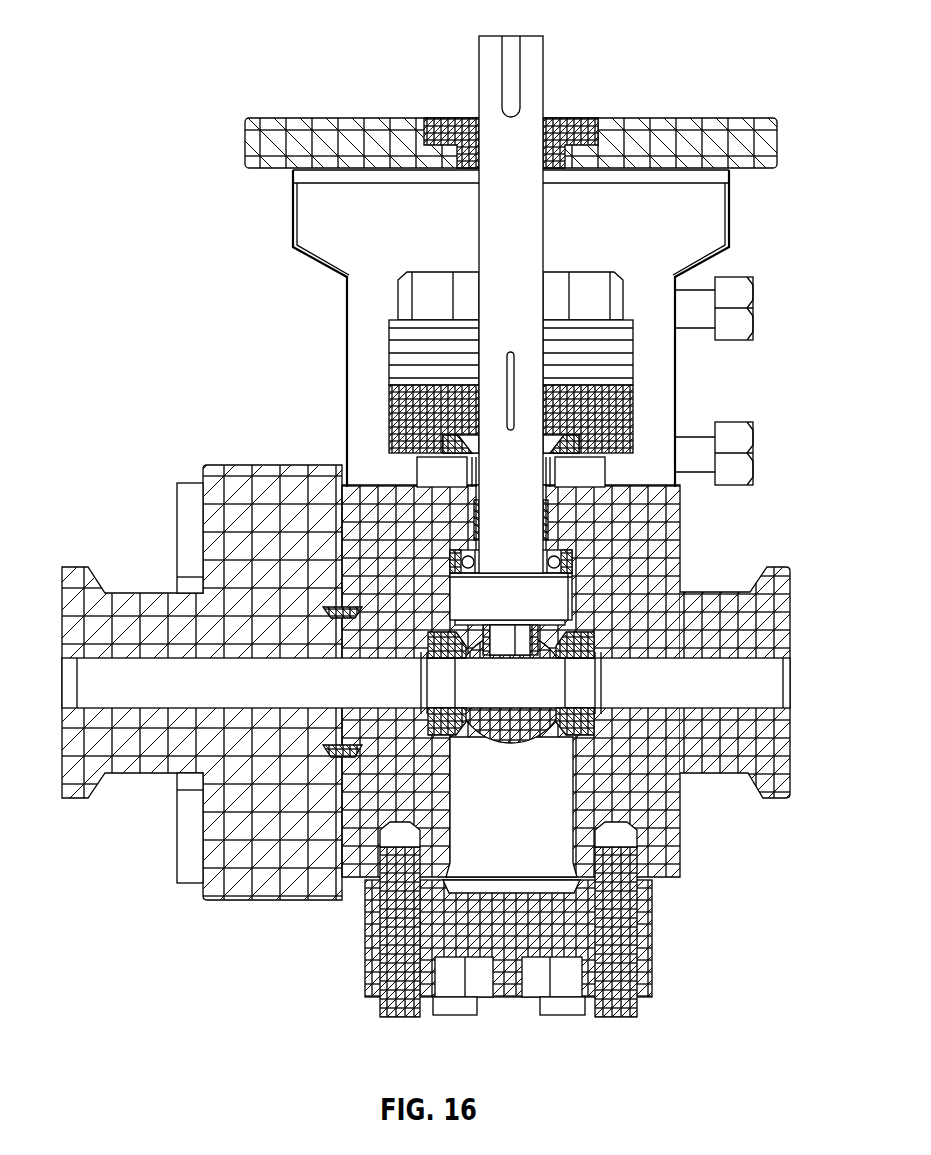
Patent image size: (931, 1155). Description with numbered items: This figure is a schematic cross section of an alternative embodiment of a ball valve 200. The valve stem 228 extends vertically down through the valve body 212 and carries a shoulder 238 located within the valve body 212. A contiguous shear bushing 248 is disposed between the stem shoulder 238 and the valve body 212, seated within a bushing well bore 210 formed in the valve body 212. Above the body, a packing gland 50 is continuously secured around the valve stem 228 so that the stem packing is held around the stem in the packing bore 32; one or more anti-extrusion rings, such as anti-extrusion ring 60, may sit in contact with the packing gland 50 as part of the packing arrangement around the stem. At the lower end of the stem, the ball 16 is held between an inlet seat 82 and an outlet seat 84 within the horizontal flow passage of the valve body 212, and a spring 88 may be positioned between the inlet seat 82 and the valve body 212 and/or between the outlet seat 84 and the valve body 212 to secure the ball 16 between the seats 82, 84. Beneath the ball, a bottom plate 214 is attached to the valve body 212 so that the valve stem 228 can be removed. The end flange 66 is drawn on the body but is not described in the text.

The ball valve 200 is at (756, 38).
The valve stem 228 is at (479, 220).
The packing gland 50 is at (450, 447).
The packing bore 32 is at (470, 516).
The anti-extrusion ring 60 is at (552, 526).
The valve body 212 is at (680, 542).
The bushing well bore 210 is at (578, 561).
The shoulder 238 is at (560, 601).
The contiguous shear bushing 248 is at (450, 570).
The outlet seat 84 is at (430, 648).
The spring 88 is at (430, 720).
The ball 16 is at (505, 737).
The inlet seat 82 is at (577, 731).
The flange 66 is at (790, 738).
The bottom plate 214 is at (652, 975).